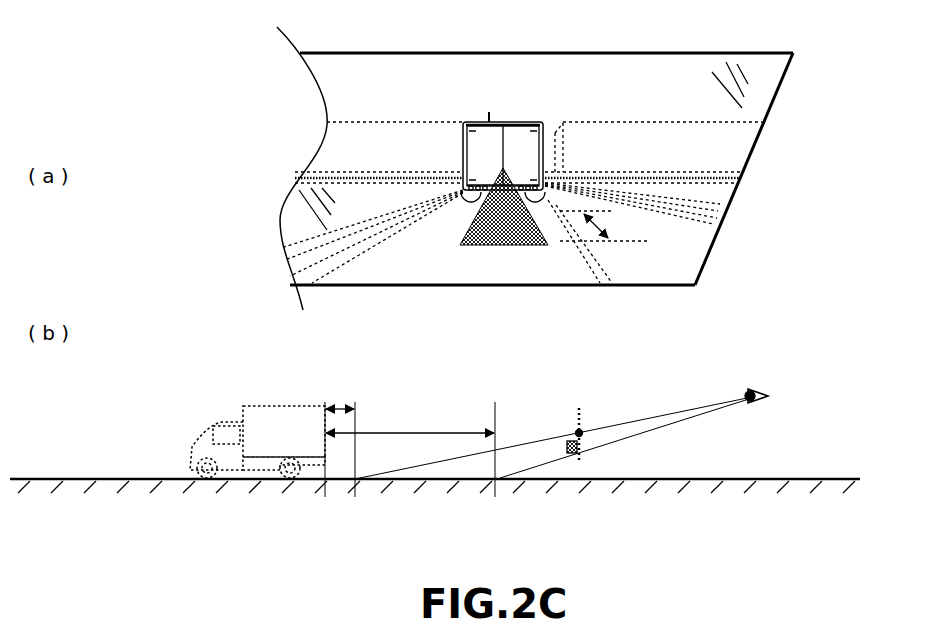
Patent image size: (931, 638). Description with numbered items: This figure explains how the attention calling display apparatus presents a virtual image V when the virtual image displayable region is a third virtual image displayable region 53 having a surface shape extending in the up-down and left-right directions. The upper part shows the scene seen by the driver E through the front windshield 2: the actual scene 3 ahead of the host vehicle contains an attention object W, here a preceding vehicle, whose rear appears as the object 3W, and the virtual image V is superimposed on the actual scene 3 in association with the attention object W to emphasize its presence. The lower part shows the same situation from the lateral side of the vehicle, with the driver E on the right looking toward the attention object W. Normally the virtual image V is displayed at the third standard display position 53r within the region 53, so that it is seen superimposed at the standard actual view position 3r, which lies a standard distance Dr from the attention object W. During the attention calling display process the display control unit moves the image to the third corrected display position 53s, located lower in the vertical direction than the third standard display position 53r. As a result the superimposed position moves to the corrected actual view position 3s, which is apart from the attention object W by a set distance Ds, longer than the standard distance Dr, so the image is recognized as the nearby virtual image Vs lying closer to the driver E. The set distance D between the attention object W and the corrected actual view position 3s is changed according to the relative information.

The front windshield 2 is at (382, 98).
The actual scene 3 is at (630, 80).
The preceding vehicle seen through windshield 3W is at (545, 120).
The corrected actual view position 3s is at (620, 242).
The standard actual view position 3r is at (345, 462).
The set distance Ds is at (596, 226).
The set distance D is at (422, 432).
The standard distance Dr is at (340, 402).
The virtual image V is at (466, 235).
The nearby virtual image Vs is at (566, 455).
The attention object W is at (250, 406).
The third virtual image displayable region 53 is at (586, 406).
The third corrected display position 53s is at (585, 453).
The third standard display position 53r is at (584, 434).
The driver E is at (766, 406).